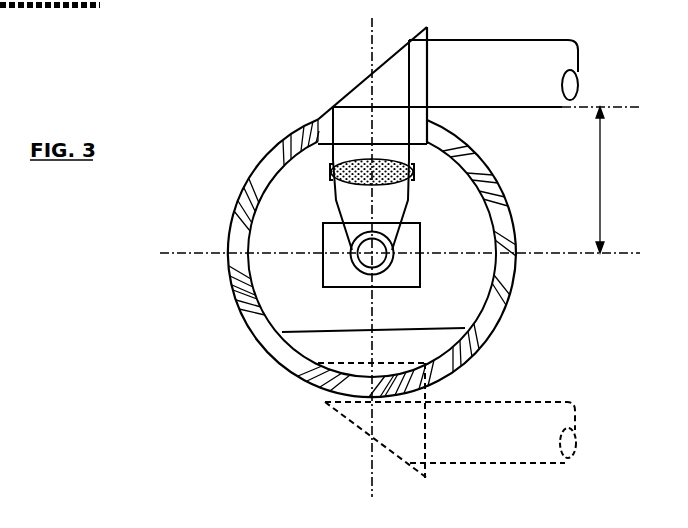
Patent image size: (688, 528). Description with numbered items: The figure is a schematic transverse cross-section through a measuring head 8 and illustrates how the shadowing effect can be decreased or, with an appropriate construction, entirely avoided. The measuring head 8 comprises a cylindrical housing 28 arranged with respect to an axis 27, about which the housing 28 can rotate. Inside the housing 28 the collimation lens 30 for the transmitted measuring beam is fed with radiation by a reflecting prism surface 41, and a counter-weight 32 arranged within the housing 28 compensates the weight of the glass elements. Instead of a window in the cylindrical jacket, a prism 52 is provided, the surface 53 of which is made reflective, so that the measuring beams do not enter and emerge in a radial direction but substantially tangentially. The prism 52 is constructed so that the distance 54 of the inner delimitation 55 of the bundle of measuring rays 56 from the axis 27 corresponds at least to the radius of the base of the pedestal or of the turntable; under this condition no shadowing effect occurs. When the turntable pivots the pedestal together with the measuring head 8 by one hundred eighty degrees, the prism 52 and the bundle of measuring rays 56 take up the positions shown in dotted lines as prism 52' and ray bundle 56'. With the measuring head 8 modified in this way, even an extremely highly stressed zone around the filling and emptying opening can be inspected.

The measuring head 8 is at (317, 313).
The axis 27 is at (377, 260).
The cylindrical housing 28 is at (238, 208).
The collimation lens 30 is at (414, 172).
The counter-weight 32 is at (293, 345).
The reflecting prism surface 41 is at (403, 240).
The prism 52 is at (372, 138).
The prism in pivoted position 52' is at (372, 424).
The reflective surface 53 is at (400, 50).
The distance 54 is at (616, 180).
The inner delimitation 55 is at (467, 107).
The bundle of measuring rays 56 is at (592, 81).
The bundle of measuring rays in pivoted position 56' is at (474, 432).